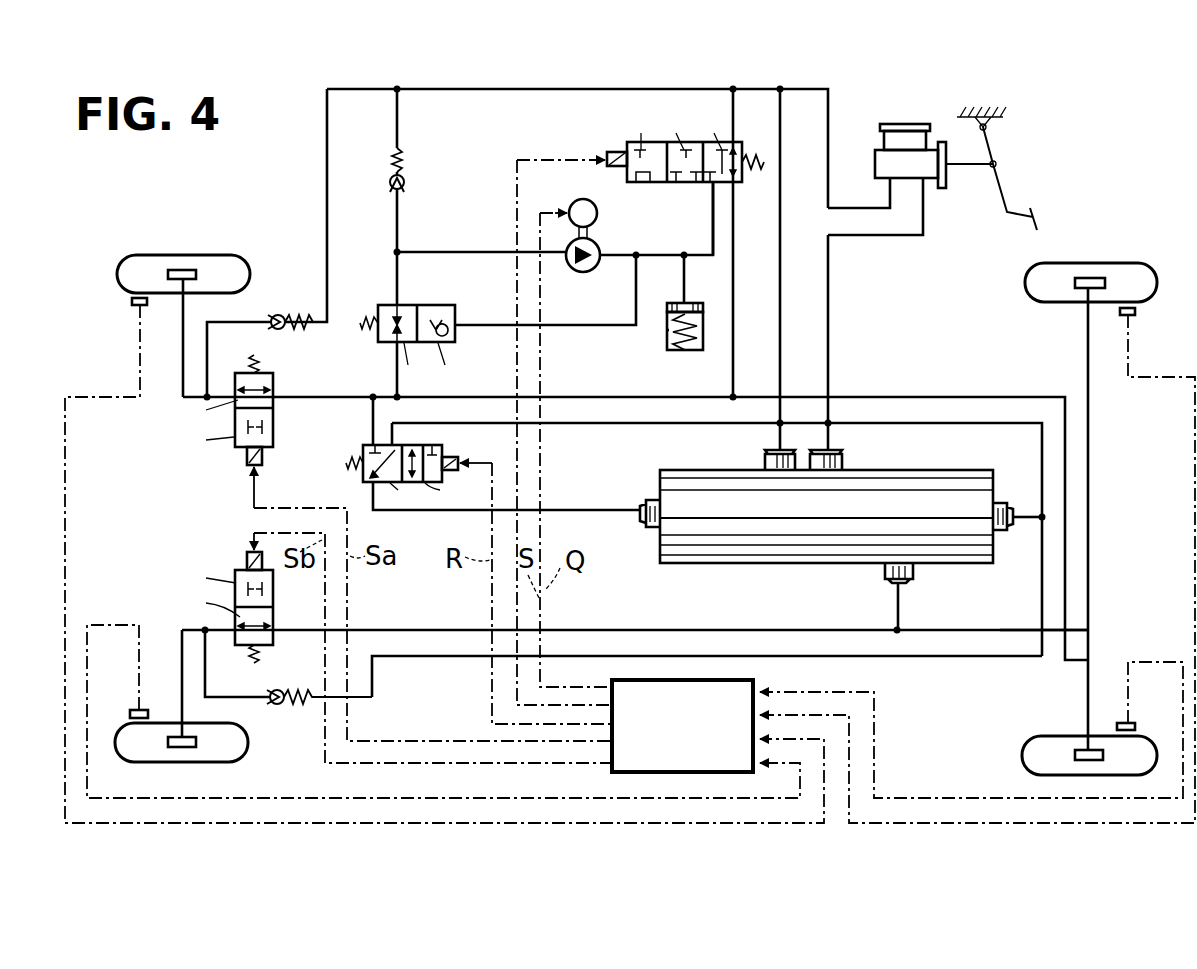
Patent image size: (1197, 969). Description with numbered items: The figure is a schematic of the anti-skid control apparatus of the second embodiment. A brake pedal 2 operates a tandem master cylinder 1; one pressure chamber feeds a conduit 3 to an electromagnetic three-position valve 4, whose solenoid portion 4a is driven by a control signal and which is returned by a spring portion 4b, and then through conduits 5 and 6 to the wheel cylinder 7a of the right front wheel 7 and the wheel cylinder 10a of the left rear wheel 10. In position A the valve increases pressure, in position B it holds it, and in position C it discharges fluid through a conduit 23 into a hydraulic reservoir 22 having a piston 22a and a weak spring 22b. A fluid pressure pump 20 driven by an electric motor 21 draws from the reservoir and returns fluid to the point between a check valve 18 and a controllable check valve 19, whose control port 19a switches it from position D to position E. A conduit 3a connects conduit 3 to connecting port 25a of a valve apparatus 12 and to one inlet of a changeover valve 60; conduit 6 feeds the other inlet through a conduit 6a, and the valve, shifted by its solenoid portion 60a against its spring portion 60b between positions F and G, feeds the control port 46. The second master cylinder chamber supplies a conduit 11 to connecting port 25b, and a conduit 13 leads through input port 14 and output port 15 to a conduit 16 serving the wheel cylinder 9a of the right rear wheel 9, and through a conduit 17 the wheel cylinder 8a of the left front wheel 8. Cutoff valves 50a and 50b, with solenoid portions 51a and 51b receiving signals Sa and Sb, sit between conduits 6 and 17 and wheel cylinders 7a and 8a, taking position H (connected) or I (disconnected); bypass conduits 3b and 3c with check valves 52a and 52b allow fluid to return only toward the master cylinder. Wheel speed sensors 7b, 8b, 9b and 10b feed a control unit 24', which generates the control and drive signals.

The tandem master cylinder 1 is at (878, 148).
The brake pedal 2 is at (1004, 205).
The conduit 3 is at (733, 92).
The conduit 3a is at (782, 305).
The conduit 3b is at (325, 170).
The conduit 3c is at (905, 660).
The electromagnetic three-position valve 4 is at (672, 185).
The solenoid portion 4a is at (612, 150).
The return spring of valve 4 4b is at (760, 170).
The conduit 5 is at (735, 305).
The conduit 6 is at (552, 396).
The conduit 6a is at (370, 400).
The right front wheel 7 is at (210, 256).
The wheel cylinder 7a is at (183, 270).
The wheel speed sensor 7b is at (134, 306).
The left front wheel 8 is at (232, 762).
The wheel cylinder 8a is at (178, 735).
The wheel speed sensor 8b is at (130, 711).
The right rear wheel 9 is at (1128, 264).
The wheel cylinder 9a is at (1092, 278).
The wheel speed sensor 9b is at (1132, 315).
The left rear wheel 10 is at (1032, 737).
The wheel cylinder 10a is at (1082, 750).
The wheel speed sensor 10b is at (1130, 722).
The conduit 11 is at (830, 283).
The valve apparatus 12 is at (680, 462).
The conduit 13 is at (950, 425).
The input port 14 is at (1012, 522).
The output port 15 is at (895, 588).
The conduit 16 is at (958, 630).
The conduit 17 is at (660, 630).
The check valve 18 is at (406, 182).
The controllable check valve 19 is at (382, 303).
The control port 19a is at (450, 320).
The fluid pressure pump 20 is at (582, 272).
The electric motor 21 is at (572, 200).
The hydraulic reservoir 22 is at (690, 352).
The piston 22a is at (672, 303).
The spring 22b is at (666, 332).
The conduit 23 is at (711, 226).
The control unit 24' is at (715, 716).
The connecting port 25a is at (775, 448).
The connecting port 25b is at (835, 448).
The control port 46 is at (640, 515).
The cutoff valve 50a is at (272, 425).
The cutoff valve 50b is at (300, 600).
The solenoid portion 51a is at (246, 460).
The solenoid portion 51b is at (246, 558).
The check valve 52a is at (280, 314).
The check valve 52b is at (275, 705).
The changeover valve 60 is at (362, 483).
The solenoid portion 60a is at (448, 456).
The spring portion 60b is at (347, 463).